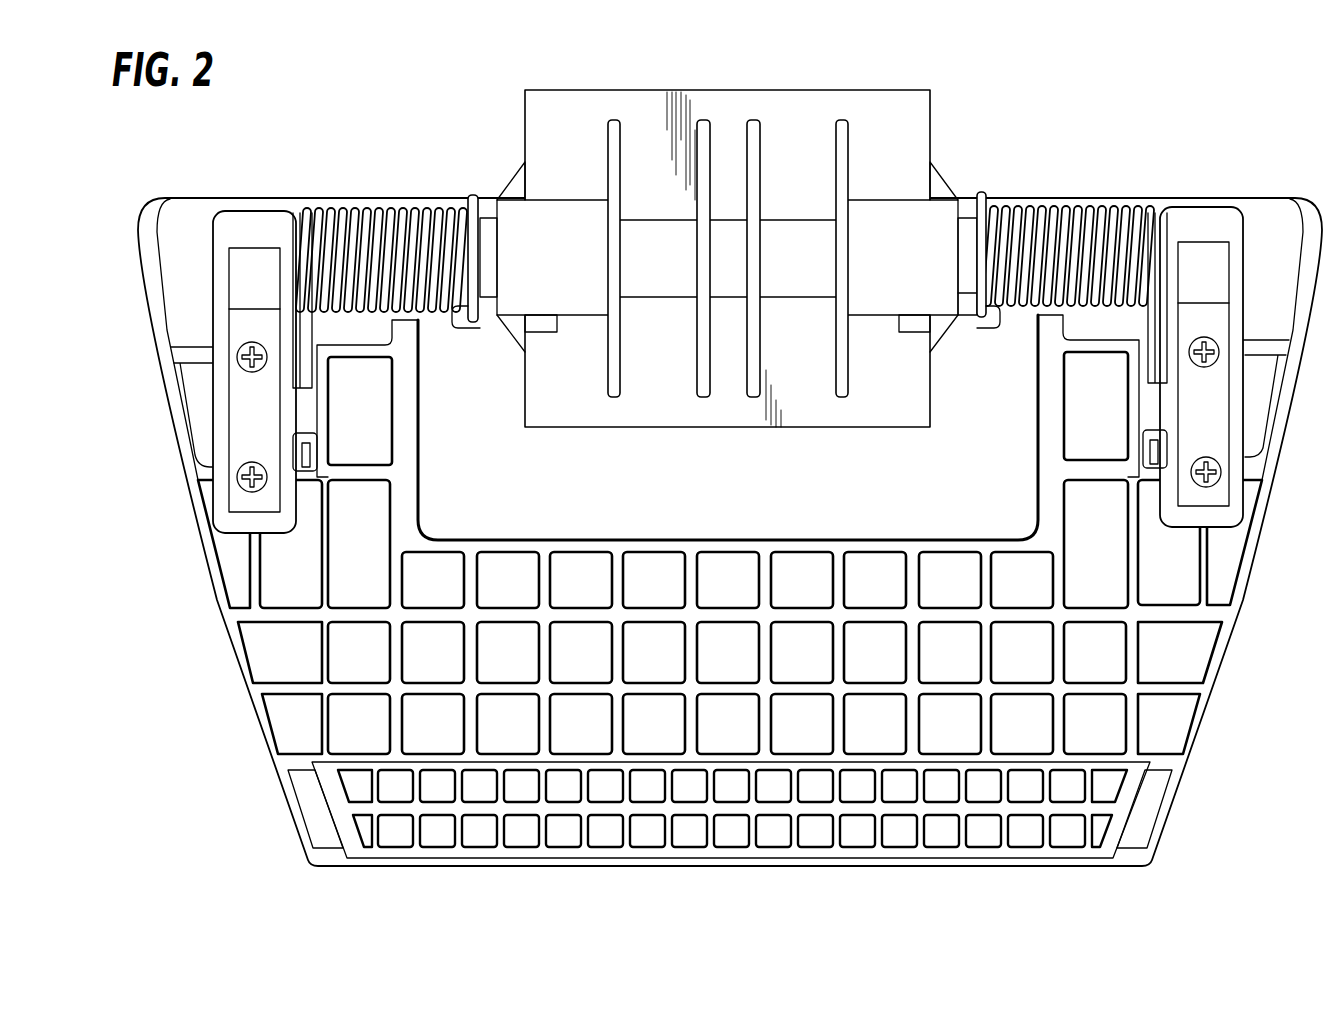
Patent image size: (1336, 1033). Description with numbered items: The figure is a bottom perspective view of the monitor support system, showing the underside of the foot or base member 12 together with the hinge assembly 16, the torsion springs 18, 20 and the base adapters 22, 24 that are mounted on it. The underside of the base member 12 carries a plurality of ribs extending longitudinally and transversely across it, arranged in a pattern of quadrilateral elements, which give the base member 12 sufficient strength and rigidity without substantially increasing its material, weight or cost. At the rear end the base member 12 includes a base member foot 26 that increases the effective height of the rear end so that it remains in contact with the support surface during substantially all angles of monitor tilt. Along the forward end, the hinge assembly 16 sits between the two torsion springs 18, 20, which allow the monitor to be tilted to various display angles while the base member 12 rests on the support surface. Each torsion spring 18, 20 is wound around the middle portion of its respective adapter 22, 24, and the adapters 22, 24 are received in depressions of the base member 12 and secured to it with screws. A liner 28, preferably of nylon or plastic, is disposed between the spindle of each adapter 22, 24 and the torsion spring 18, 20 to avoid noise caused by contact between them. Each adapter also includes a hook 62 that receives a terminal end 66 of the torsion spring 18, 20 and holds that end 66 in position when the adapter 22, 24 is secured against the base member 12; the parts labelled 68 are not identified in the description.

The base member 12 is at (1222, 608).
The hinge assembly 16 is at (727, 110).
The torsion spring 18 is at (378, 205).
The torsion spring 20 is at (1060, 203).
The base adapter 22 is at (253, 228).
The base adapter 24 is at (1198, 267).
The base member foot 26 is at (697, 870).
The liner 28 is at (472, 197).
The hook 62 is at (302, 411).
The terminal end 66 is at (312, 323).
The hook end 68 is at (484, 328).